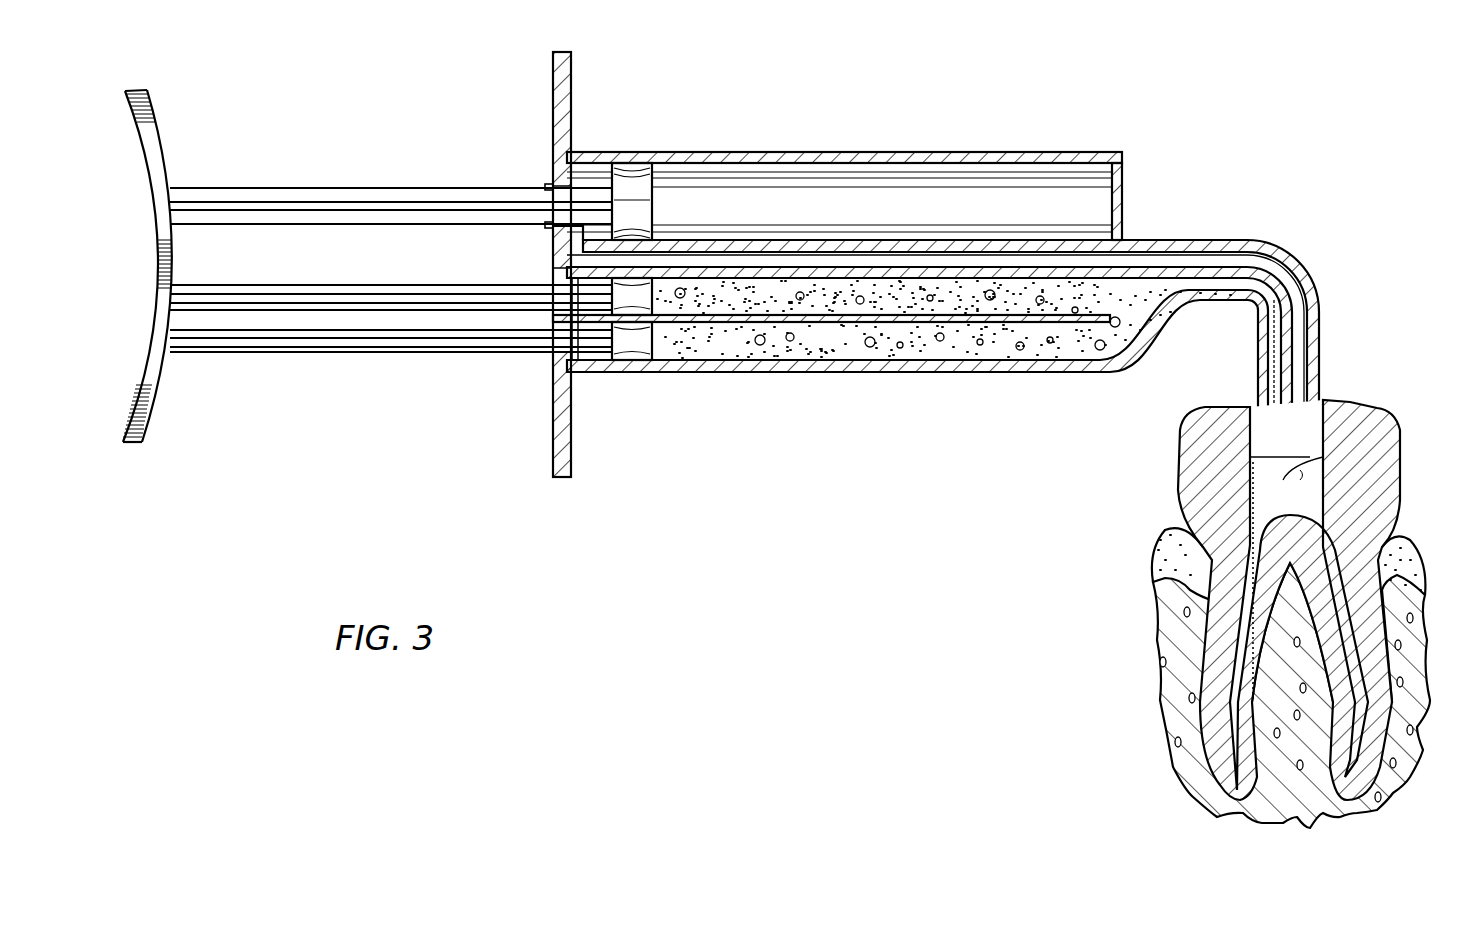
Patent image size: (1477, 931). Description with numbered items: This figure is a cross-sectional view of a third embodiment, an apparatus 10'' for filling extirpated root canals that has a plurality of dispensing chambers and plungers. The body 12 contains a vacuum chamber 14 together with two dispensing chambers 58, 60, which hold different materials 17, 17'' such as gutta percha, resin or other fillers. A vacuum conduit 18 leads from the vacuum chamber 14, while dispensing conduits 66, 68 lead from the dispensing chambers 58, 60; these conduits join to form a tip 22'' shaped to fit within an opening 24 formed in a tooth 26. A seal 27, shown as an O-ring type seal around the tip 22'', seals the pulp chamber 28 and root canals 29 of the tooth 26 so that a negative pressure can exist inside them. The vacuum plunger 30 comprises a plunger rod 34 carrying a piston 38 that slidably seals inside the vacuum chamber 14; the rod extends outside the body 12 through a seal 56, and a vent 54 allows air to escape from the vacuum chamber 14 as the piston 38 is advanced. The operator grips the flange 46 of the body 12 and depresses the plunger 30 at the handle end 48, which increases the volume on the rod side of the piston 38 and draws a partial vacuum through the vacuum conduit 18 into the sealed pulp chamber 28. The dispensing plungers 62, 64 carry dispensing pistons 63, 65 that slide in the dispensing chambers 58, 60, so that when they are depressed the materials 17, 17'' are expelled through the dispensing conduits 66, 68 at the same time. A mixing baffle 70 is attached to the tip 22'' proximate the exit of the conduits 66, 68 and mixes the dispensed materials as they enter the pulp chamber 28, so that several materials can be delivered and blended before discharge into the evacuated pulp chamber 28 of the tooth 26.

The apparatus 10'' is at (722, 265).
The body 12 is at (896, 148).
The vacuum chamber 14 is at (930, 187).
The filler material 17 is at (918, 361).
The filler material 17'' is at (944, 340).
The vacuum conduit 18 is at (1283, 270).
The applicator tip 22'' is at (971, 328).
The opening 24 is at (1300, 477).
The tooth 26 is at (1403, 437).
The seal 27 is at (1322, 412).
The pulp chamber 28 is at (1283, 517).
The root canals 29 is at (1300, 822).
The plunger 30 is at (398, 188).
The plunger rod 34 is at (295, 188).
The piston 38 is at (630, 172).
The flange 46 is at (570, 62).
The handle 48 is at (160, 140).
The vent 54 is at (1123, 172).
The seal 56 is at (548, 182).
The dispensing chamber 58 is at (887, 348).
The dispensing chamber 60 is at (956, 291).
The plunger 62 is at (292, 352).
The dispensing piston 63 is at (633, 343).
The plunger 64 is at (403, 313).
The dispensing piston 65 is at (655, 318).
The dispensing conduit 66 is at (1279, 377).
The dispensing conduit 68 is at (1287, 315).
The mixing baffle 70 is at (1260, 437).